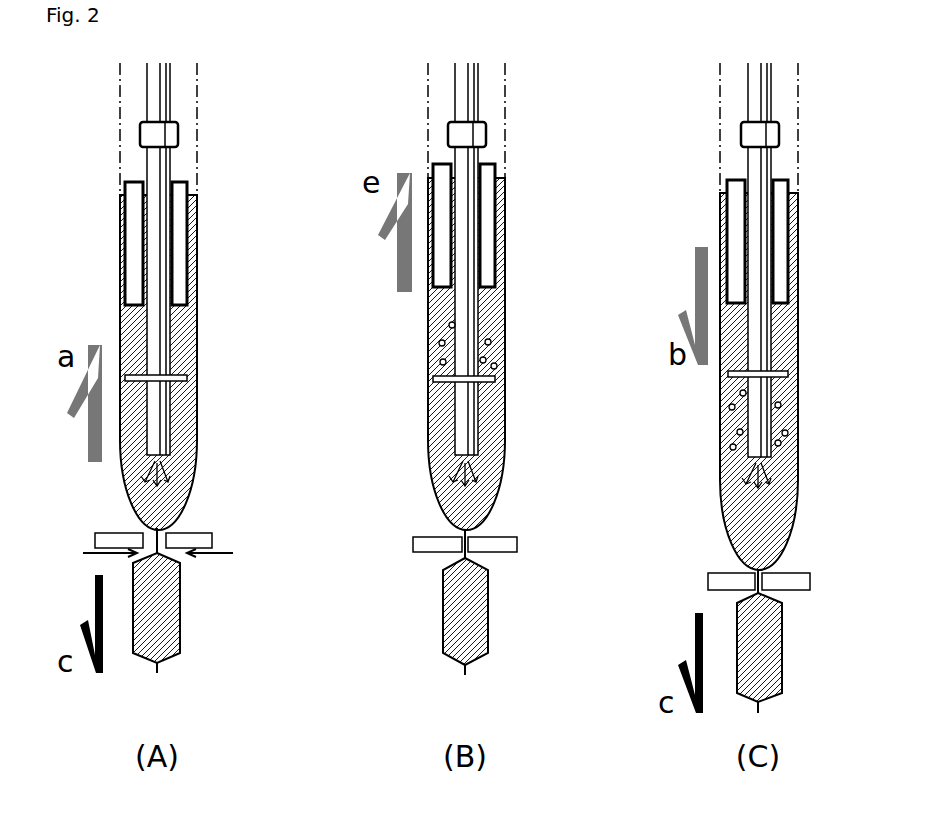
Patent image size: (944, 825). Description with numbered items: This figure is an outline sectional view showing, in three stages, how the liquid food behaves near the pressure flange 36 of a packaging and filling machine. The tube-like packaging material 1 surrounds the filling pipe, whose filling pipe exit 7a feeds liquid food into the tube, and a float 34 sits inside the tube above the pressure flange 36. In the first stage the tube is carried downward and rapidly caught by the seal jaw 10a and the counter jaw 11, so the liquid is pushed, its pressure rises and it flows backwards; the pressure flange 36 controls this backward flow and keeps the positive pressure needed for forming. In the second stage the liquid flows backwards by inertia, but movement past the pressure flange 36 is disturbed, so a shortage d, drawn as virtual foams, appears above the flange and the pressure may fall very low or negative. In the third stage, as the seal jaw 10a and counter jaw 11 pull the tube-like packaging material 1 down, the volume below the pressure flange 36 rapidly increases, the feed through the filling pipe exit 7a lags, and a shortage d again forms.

The tube-like packaging material 1 is at (117, 135).
The float 34 is at (188, 258).
The pressure flange 36 is at (187, 372).
The filling pipe exit 7a is at (165, 457).
The counter jaw 11 is at (95, 541).
The seal jaw 10a is at (212, 542).
The shortage d is at (495, 338).